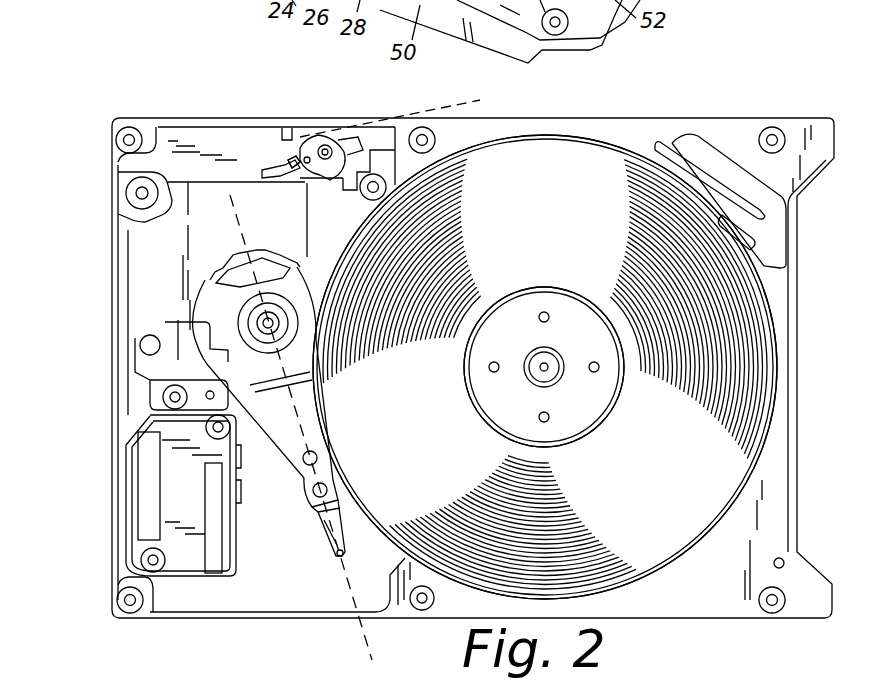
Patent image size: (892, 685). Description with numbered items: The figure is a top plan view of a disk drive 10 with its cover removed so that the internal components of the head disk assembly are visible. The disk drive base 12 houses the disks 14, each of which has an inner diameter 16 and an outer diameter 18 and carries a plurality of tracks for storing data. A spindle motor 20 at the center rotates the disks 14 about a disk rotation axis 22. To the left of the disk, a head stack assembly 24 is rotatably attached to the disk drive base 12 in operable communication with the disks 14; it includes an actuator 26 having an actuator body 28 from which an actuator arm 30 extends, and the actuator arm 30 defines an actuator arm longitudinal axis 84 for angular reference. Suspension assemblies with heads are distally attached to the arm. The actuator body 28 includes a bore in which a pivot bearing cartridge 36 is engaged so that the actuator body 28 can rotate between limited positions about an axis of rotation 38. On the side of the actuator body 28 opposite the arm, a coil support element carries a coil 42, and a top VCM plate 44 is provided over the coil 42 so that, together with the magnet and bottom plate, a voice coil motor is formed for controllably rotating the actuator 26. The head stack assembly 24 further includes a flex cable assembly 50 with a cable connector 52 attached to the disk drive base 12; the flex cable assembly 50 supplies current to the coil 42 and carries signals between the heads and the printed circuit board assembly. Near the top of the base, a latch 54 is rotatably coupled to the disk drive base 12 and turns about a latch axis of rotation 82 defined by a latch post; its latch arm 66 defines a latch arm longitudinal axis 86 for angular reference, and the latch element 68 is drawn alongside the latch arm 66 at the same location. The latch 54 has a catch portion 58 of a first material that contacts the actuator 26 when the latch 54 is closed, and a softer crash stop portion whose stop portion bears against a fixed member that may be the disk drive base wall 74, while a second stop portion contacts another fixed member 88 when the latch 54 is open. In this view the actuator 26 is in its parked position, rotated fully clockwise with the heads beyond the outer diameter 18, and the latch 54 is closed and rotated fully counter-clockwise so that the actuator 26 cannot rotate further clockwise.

The disk drive 10 is at (128, 60).
The disk drive base 12 is at (645, 122).
The disk 14 is at (684, 447).
The inner diameter 16 is at (578, 440).
The outer diameter 18 is at (733, 510).
The spindle motor 20 is at (556, 294).
The disk rotation axis 22 is at (542, 366).
The head stack assembly 24 is at (232, 330).
The actuator 26 is at (240, 340).
The actuator body 28 is at (250, 352).
The actuator arm 30 is at (312, 407).
The pivot bearing cartridge 36 is at (283, 333).
The axis of rotation 38 is at (280, 323).
The coil 42 is at (272, 262).
The top VCM plate 44 is at (148, 235).
The flex cable assembly 50 is at (172, 482).
The cable connector 52 is at (172, 512).
The latch 54 is at (320, 137).
The catch portion 58 is at (266, 172).
The latch arm 66 is at (292, 163).
The latch tab 68 is at (294, 162).
The disk drive base wall 74 is at (382, 125).
The latch axis of rotation 82 is at (327, 150).
The actuator arm longitudinal axis 84 is at (372, 658).
The latch arm longitudinal axis 86 is at (466, 103).
The fixed member 88 is at (286, 127).